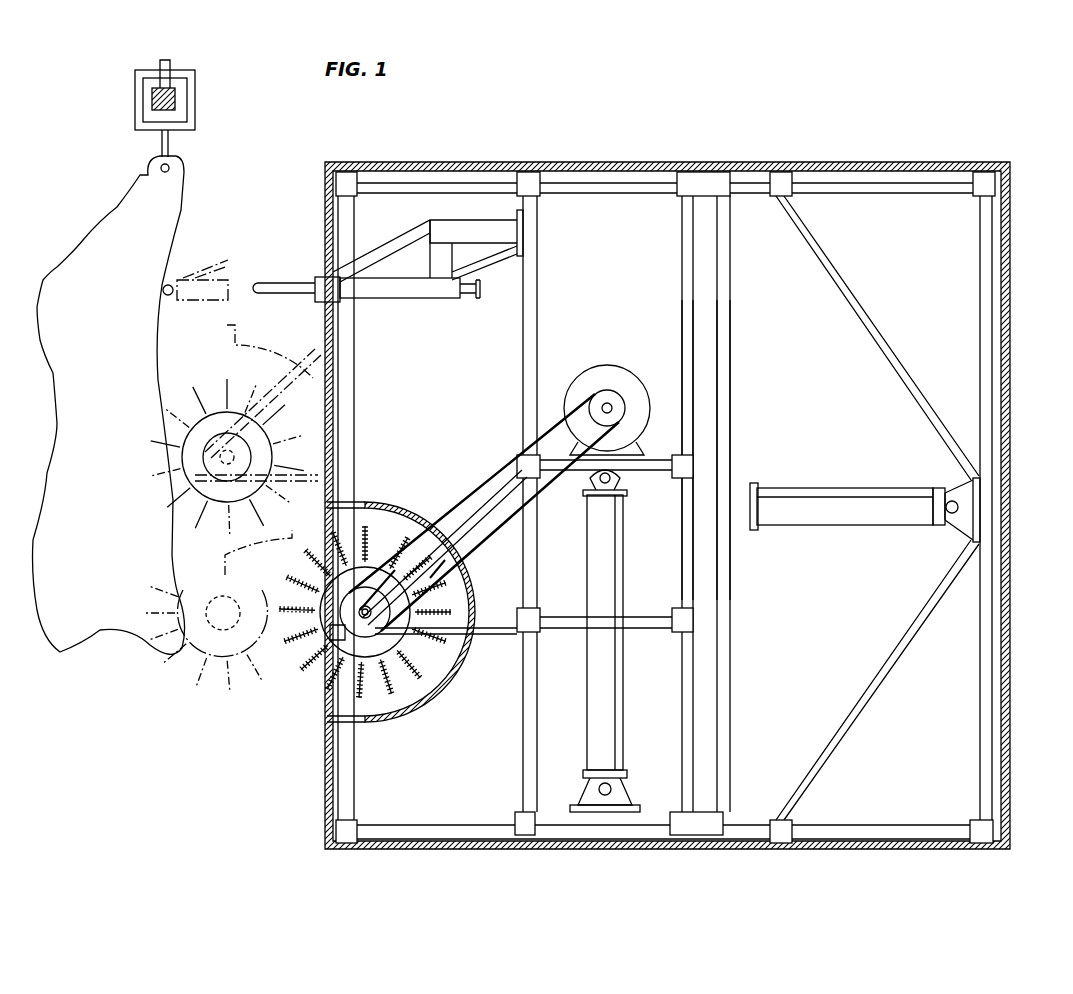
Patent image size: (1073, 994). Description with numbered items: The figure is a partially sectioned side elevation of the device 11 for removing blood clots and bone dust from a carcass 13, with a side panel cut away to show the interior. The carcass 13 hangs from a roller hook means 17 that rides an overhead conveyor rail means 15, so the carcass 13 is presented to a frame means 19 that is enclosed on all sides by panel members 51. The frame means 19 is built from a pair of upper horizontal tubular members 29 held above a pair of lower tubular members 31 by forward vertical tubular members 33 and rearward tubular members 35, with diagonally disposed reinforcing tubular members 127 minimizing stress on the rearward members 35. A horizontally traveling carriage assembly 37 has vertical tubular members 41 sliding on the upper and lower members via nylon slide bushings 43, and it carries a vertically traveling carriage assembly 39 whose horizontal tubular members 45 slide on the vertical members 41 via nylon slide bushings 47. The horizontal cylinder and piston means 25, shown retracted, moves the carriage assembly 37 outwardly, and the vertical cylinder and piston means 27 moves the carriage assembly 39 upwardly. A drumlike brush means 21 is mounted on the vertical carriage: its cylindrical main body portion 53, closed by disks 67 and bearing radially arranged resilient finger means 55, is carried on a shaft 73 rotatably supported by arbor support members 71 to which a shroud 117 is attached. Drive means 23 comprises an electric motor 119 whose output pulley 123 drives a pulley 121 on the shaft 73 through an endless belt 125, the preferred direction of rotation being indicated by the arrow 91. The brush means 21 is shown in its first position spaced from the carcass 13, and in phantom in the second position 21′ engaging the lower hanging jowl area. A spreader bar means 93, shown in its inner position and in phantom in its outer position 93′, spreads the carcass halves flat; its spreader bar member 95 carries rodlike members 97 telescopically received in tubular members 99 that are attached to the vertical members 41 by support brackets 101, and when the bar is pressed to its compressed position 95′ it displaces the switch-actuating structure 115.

The device 11 is at (948, 100).
The carcass 13 is at (96, 581).
The overhead conveyor rail means 15 is at (152, 100).
The roller hook means 17 is at (162, 140).
The frame means 19 is at (340, 168).
The brush means 21 is at (300, 720).
The second position of brush means 21′ is at (192, 688).
The drive means 23 is at (600, 368).
The horizontal cylinder and piston means 25 is at (848, 522).
The vertical cylinder and piston means 27 is at (610, 700).
The upper horizontal tubular members 29 is at (830, 183).
The lower horizontally disposed tubular members 31 is at (850, 825).
The forward vertical tubular members 33 is at (352, 382).
The rearward tubular members 35 is at (980, 298).
The horizontally traveling carriage assembly 37 is at (722, 352).
The vertically traveling carriage assembly 39 is at (655, 457).
The vertically disposed tubular members 41 is at (536, 300).
The nylon slide bushings 43 is at (530, 178).
The horizontally disposed tubular members 45 is at (580, 470).
The nylon slide bushings 47 is at (522, 456).
The panel members 51 is at (898, 164).
The cylindrical main body portion 53 is at (372, 525).
The resilient finger means 55 is at (398, 540).
The disks 67 is at (432, 558).
The arbor support members 71 is at (482, 512).
The shaft 73 is at (345, 632).
The arrow 91 is at (372, 615).
The spreader bar means 93 is at (380, 240).
The outer position of spreader bar means 93′ is at (180, 268).
The spreader bar member 95 is at (262, 284).
The compressed position of spreader bar member 95′ is at (165, 296).
The rodlike members 97 is at (300, 290).
The tubular members 99 is at (390, 292).
The support brackets 101 is at (452, 240).
The switch-actuating structure 115 is at (480, 298).
The shroud 117 is at (250, 355).
The electric motor 119 is at (618, 390).
The pulley 121 is at (352, 640).
The output pulley 123 is at (613, 406).
The endless belt 125 is at (558, 430).
The reinforcing tubular members 127 is at (880, 345).